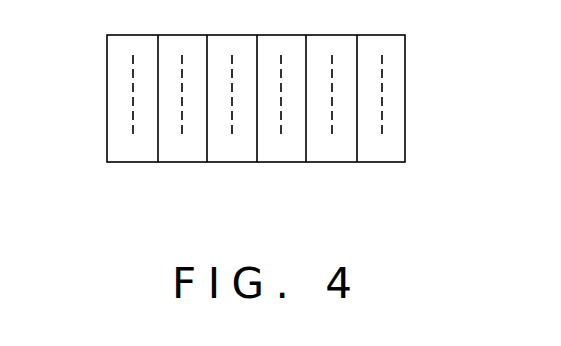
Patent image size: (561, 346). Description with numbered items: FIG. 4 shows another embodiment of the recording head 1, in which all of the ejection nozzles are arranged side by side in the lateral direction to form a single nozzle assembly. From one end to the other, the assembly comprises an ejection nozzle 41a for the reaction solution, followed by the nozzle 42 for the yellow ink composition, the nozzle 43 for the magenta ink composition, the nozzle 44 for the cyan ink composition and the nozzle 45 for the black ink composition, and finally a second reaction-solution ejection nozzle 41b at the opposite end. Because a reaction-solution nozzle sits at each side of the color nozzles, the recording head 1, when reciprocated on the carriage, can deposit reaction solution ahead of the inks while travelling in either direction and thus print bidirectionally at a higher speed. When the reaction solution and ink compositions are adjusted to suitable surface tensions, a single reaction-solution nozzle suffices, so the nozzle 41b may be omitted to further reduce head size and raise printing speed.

The recording head 1 is at (405, 112).
The ejection nozzle for reaction solution 41a is at (133, 123).
The yellow ink nozzle 42 is at (182, 123).
The magenta ink nozzle 43 is at (232, 129).
The cyan ink nozzle 44 is at (281, 129).
The black ink nozzle 45 is at (332, 128).
The ejection nozzle for reaction solution 41b is at (383, 129).